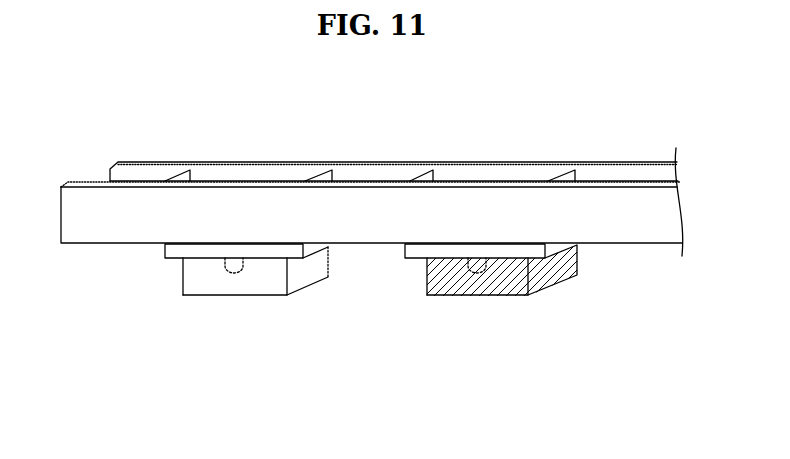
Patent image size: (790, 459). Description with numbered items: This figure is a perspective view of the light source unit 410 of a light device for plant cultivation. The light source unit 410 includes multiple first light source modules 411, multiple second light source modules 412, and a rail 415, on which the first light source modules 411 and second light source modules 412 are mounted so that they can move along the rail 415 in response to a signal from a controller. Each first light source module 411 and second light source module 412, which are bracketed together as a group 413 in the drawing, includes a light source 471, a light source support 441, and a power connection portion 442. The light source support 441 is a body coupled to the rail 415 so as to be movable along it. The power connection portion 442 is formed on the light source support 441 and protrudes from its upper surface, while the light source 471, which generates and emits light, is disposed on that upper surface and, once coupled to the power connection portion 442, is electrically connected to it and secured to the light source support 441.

The light source unit 410 is at (176, 143).
The rail 415 is at (377, 163).
The light source support 441 is at (165, 248).
The light source 471 is at (183, 278).
The power connection portion 442 is at (225, 270).
The first light source module 411 is at (308, 295).
The second light source module 412 is at (417, 295).
The coupling portion 413 is at (406, 377).